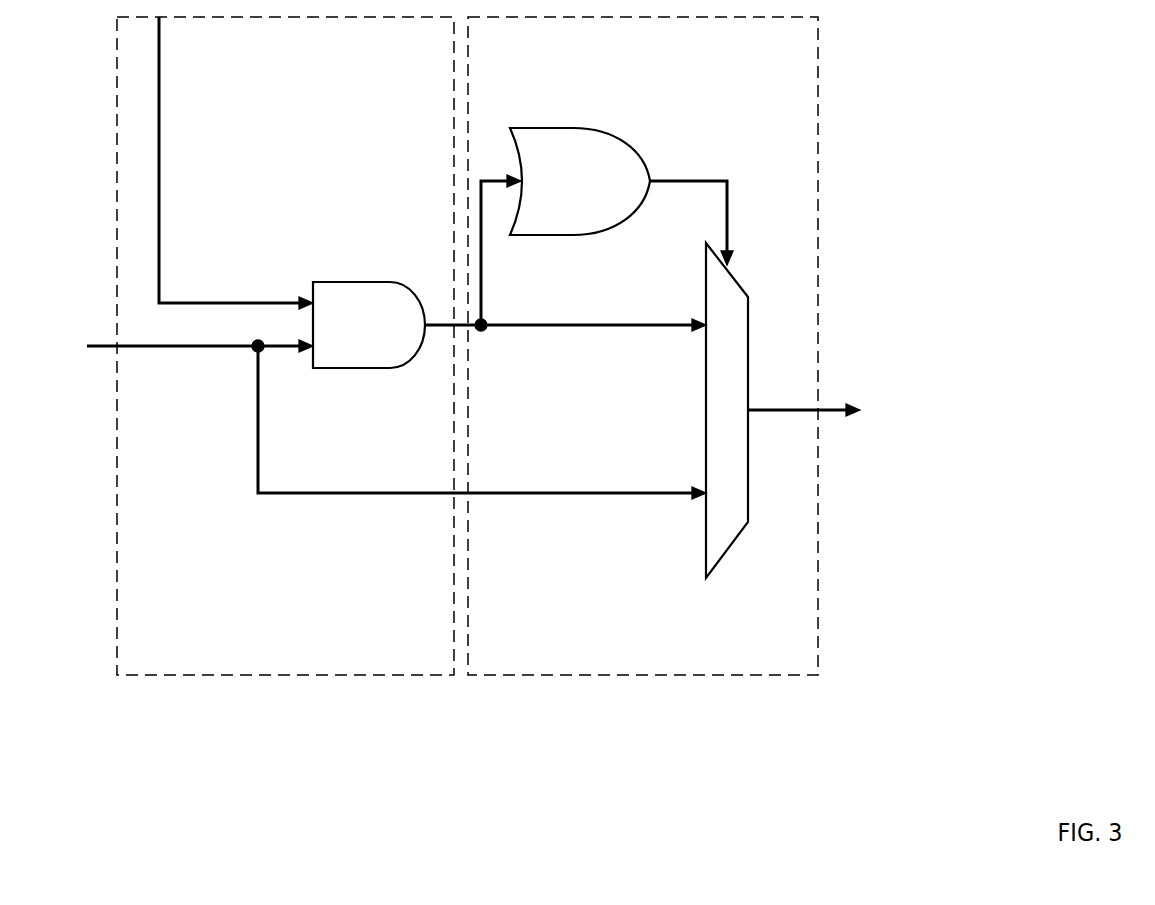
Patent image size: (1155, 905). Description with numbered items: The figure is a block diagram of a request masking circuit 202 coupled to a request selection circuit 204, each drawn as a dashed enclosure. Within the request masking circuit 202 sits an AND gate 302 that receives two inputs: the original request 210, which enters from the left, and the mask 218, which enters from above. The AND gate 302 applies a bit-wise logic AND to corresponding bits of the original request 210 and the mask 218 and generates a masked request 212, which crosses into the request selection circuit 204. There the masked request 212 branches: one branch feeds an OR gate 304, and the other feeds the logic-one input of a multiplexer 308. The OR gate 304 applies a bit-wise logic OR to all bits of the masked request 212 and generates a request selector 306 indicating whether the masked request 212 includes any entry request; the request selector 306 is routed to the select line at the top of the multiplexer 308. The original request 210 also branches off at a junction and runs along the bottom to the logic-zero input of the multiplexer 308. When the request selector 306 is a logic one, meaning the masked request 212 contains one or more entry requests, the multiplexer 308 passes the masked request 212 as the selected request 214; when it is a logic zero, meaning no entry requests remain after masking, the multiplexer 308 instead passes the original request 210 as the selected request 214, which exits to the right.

The request masking circuit 202 is at (340, 664).
The request selection circuit 204 is at (675, 655).
The original request 210 is at (195, 345).
The masked request 212 is at (440, 328).
The selected request 214 is at (813, 415).
The mask 218 is at (160, 208).
The AND gate 302 is at (336, 341).
The OR gate 304 is at (540, 196).
The request selector 306 is at (700, 181).
The multiplexer 308 is at (708, 432).